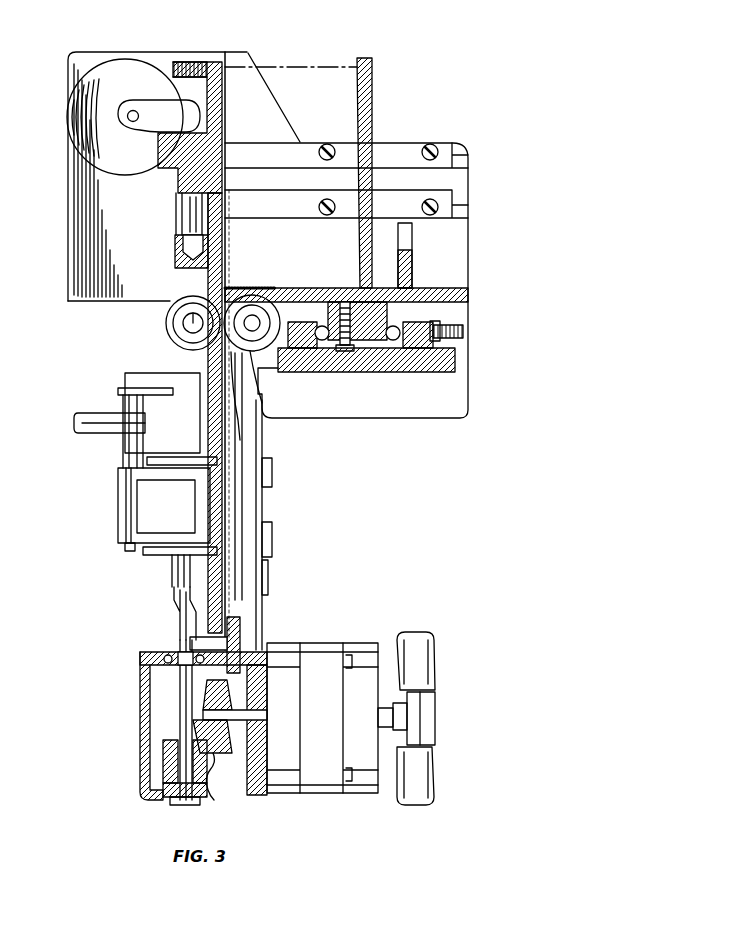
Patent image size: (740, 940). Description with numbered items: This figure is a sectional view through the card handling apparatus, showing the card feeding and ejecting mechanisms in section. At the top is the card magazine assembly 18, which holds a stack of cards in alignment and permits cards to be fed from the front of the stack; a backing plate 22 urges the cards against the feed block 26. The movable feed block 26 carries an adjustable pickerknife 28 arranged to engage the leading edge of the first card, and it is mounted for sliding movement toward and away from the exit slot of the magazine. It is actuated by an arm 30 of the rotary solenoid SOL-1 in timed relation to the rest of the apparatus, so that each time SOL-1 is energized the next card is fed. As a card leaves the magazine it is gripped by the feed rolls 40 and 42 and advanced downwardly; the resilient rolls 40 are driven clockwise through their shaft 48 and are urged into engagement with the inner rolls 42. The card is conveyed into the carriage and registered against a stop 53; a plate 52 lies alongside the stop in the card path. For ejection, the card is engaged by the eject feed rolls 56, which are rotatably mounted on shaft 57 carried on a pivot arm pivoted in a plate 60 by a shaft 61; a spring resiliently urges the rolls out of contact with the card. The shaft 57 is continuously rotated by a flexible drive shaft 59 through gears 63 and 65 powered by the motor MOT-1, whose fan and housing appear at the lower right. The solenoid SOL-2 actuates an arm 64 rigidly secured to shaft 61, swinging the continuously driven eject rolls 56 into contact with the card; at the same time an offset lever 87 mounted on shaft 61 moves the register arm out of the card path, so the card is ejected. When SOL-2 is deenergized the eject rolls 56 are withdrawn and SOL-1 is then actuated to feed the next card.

The rotary solenoid SOL-1 is at (118, 56).
The arm 30 is at (148, 100).
The pickerknife 28 is at (214, 62).
The feed block 26 is at (174, 190).
The card magazine assembly 18 is at (303, 67).
The backing plate 22 is at (372, 76).
The inner feed rolls 42 is at (272, 368).
The resilient feed rolls 40 is at (168, 306).
The shaft 48 is at (185, 326).
The flat plate 52 is at (235, 572).
The stop 53 is at (225, 606).
The solenoid SOL-2 is at (134, 373).
The offset lever 87 is at (156, 395).
The arm 64 is at (93, 436).
The eject feed rolls 56 is at (158, 457).
The shaft 61 is at (122, 504).
The plate 60 is at (121, 536).
The shaft 57 is at (172, 572).
The flexible drive shaft 59 is at (176, 600).
The gear 63 is at (157, 726).
The gear 65 is at (222, 755).
The motor MOT-1 is at (334, 793).